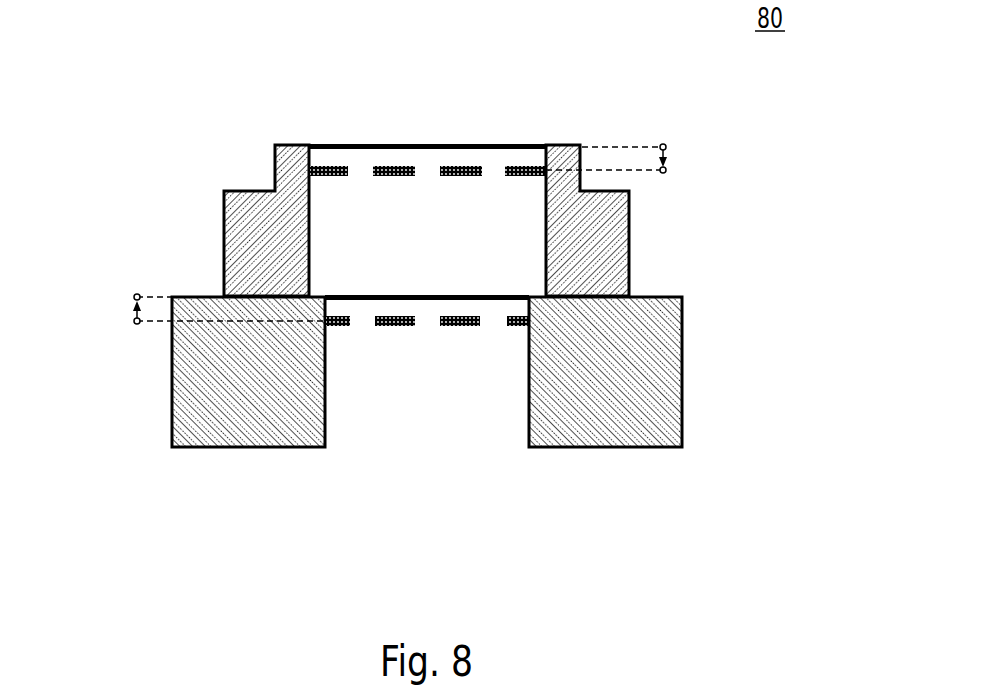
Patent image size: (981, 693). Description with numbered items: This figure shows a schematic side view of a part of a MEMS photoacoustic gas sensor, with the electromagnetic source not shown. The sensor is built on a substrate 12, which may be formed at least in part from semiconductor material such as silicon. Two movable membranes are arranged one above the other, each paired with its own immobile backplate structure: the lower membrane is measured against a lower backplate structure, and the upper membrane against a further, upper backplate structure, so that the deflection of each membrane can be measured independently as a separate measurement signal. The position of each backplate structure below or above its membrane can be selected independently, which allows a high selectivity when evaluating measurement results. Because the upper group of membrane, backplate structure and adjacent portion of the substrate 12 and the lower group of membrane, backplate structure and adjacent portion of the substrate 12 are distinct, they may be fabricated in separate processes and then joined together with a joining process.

The substrate 12 is at (460, 368).